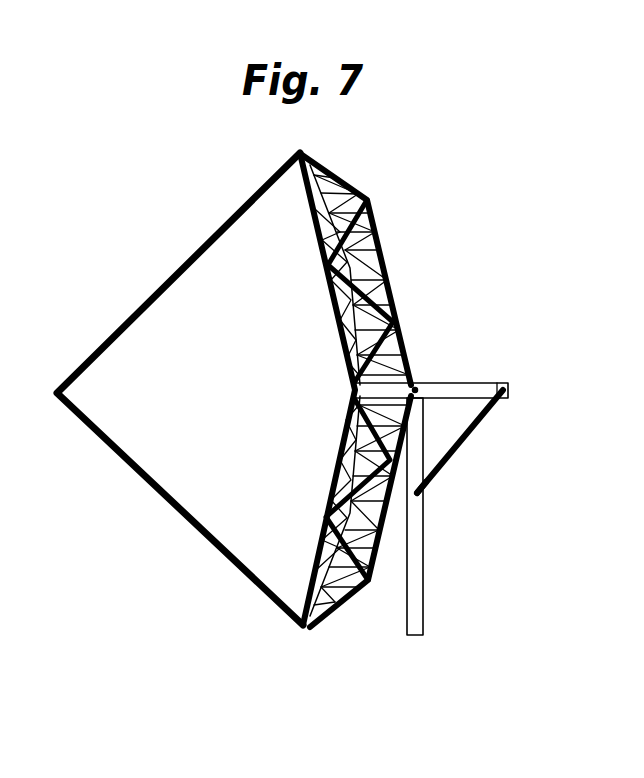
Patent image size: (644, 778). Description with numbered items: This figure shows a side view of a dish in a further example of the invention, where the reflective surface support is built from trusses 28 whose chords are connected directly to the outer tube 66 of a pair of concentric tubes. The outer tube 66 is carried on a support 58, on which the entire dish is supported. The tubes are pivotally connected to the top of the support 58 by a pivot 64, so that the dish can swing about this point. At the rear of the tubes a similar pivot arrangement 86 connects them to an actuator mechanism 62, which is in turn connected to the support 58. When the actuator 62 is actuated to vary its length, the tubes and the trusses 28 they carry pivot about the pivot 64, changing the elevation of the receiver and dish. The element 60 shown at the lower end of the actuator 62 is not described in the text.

The trusses 28 is at (388, 362).
The outer tube 66 is at (487, 392).
The pivot arrangement 86 is at (508, 398).
The pivot 64 is at (415, 390).
The support 58 is at (417, 580).
The actuator mechanism 62 is at (457, 453).
The lower end of brace 60 is at (420, 492).